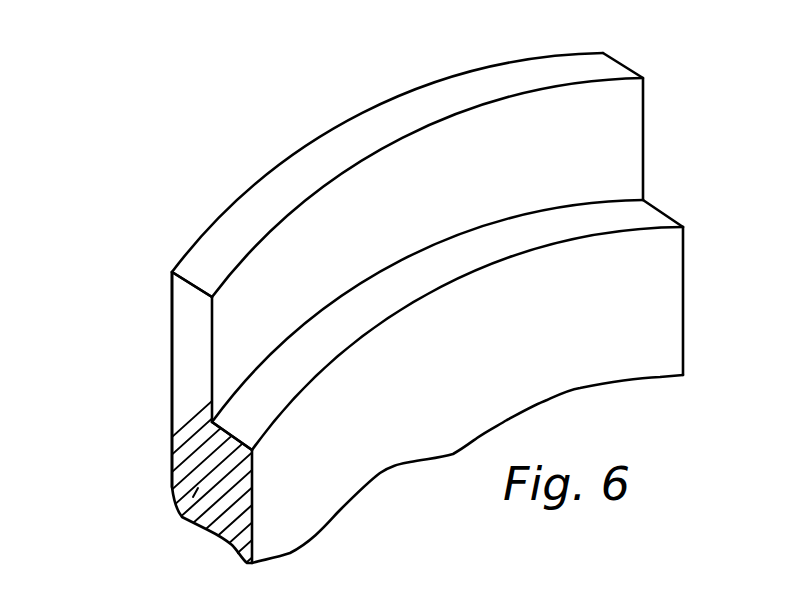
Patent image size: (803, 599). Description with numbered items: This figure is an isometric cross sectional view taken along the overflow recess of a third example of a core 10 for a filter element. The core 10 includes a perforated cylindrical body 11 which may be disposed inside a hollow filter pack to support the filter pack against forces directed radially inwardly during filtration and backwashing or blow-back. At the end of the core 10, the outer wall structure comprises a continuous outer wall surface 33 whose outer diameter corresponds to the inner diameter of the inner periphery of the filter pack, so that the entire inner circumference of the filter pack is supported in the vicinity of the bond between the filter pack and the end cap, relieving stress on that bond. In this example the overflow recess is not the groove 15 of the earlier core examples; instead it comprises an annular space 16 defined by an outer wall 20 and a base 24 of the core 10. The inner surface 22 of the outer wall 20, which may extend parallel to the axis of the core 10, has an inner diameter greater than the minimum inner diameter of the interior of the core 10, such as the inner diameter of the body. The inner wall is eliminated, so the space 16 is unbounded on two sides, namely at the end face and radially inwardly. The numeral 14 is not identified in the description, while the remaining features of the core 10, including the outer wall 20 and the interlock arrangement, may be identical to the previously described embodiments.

The core 10 is at (180, 517).
The perforated cylindrical body 11 is at (640, 333).
The upper end face 14 is at (382, 136).
The groove 15 is at (427, 148).
The annular space 16 is at (330, 230).
The outer wall 20 is at (617, 60).
The inner surface 22 is at (242, 305).
The base 24 is at (660, 210).
The continuous outer wall surface 33 is at (172, 367).